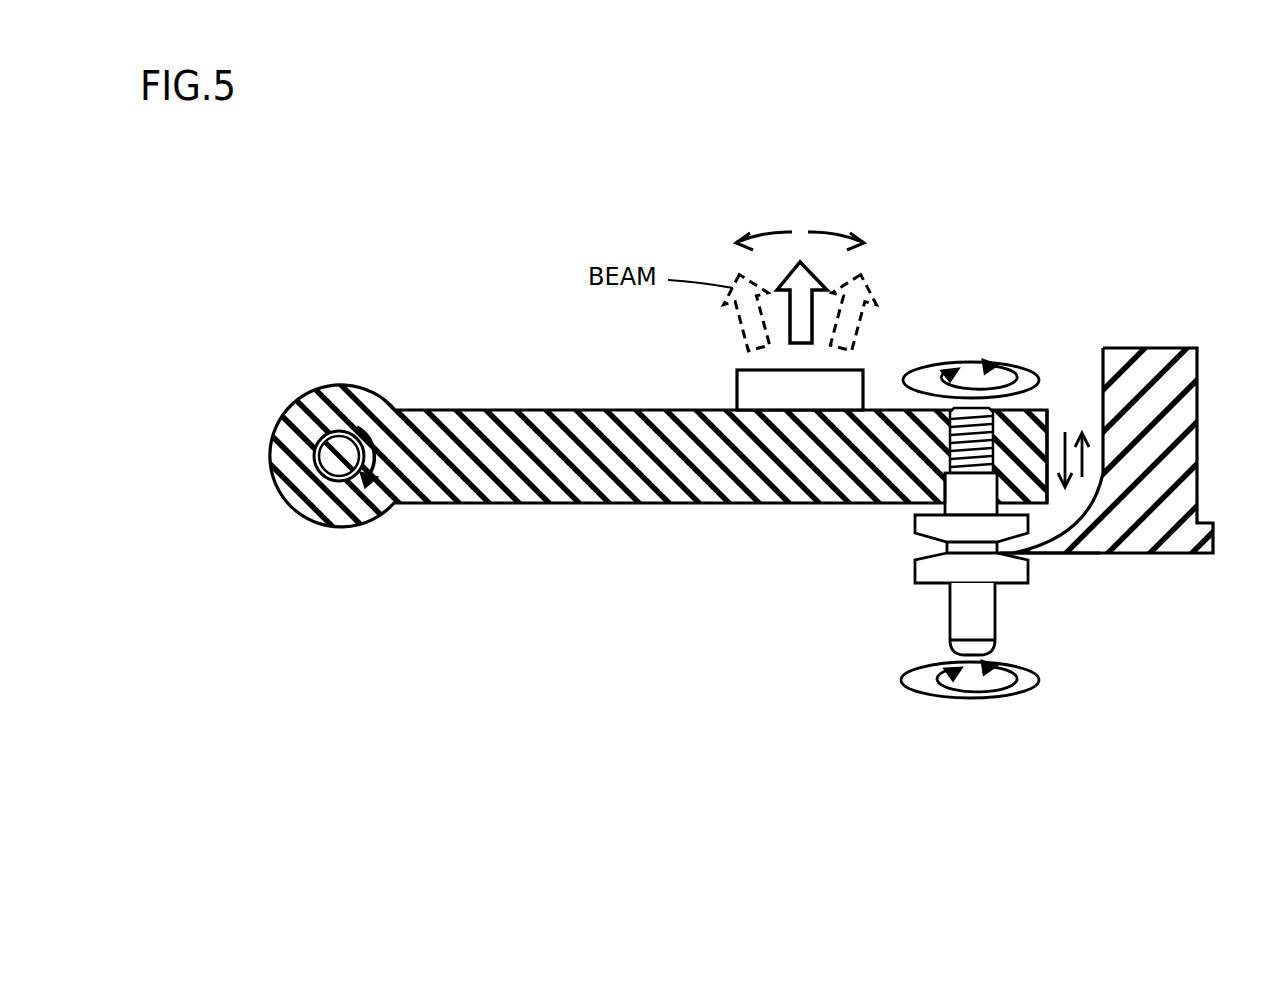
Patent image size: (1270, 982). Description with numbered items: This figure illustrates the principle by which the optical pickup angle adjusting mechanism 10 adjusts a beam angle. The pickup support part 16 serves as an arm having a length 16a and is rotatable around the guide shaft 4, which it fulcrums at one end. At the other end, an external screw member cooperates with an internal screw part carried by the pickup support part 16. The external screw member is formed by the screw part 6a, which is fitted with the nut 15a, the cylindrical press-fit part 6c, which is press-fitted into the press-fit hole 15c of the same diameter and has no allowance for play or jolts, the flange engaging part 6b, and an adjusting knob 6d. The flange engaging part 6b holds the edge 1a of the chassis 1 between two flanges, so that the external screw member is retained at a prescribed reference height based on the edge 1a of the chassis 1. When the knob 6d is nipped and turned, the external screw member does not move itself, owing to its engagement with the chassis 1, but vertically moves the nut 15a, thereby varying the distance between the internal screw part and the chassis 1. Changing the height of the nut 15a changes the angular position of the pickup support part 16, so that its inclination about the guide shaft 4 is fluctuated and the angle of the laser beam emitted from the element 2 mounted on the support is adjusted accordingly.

The chassis 1 is at (1172, 453).
The edge of the chassis 1a is at (1059, 555).
The light emitting element 2 is at (866, 398).
The guide shaft 4 is at (343, 466).
The screw part 6a is at (947, 418).
The flange engaging part 6b is at (905, 515).
The cylindrical press-fit part 6c is at (945, 511).
The adjusting knob 6d is at (962, 612).
The optical pickup angle adjusting mechanism 10 is at (1010, 331).
The nut 15a is at (998, 458).
The press-fit hole 15c is at (1043, 440).
The pickup support part 16 is at (525, 470).
The length of the arm 16a is at (973, 372).